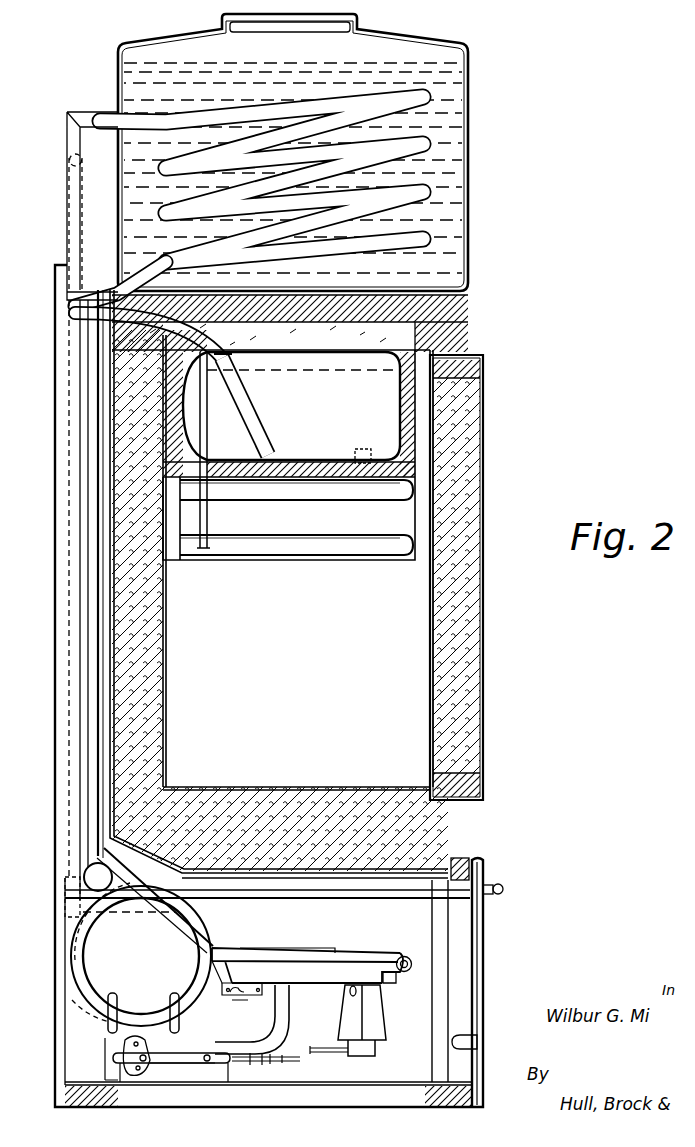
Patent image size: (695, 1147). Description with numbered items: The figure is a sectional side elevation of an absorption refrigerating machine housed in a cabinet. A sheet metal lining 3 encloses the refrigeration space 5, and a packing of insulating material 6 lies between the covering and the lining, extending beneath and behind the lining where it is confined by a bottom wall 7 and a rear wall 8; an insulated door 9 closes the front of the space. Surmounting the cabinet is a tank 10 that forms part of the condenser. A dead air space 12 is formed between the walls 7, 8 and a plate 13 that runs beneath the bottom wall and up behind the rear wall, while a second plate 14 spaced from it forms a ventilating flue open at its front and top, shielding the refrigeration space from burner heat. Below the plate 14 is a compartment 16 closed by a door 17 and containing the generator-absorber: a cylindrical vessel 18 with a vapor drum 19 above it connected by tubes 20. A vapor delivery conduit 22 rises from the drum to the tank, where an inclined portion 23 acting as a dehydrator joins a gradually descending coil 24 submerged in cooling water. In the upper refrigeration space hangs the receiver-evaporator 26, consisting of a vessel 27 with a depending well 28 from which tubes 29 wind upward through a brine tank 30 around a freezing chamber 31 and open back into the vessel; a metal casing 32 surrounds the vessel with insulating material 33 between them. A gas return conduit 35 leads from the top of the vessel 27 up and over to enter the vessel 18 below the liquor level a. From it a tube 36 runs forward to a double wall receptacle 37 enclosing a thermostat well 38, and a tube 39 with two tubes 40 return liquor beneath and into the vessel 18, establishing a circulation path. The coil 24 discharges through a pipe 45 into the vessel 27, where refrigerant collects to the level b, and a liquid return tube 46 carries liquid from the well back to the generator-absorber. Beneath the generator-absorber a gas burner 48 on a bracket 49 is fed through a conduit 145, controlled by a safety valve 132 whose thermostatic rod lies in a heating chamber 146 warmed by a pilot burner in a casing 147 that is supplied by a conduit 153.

The sheet metal lining 3 is at (166, 641).
The refrigeration space 5 is at (298, 561).
The insulating material 6 is at (273, 790).
The bottom wall 7 is at (273, 880).
The rear wall 8 is at (110, 660).
The insulated door 9 is at (466, 580).
The tank 10 is at (470, 112).
The dead air space 12 is at (113, 697).
The plate 13 is at (110, 618).
The plate 14 is at (322, 898).
The compartment 16 is at (405, 1010).
The door 17 is at (485, 968).
The cylindrical vessel 18 is at (141, 956).
The vapor drum 19 is at (88, 878).
The tubes 20 is at (112, 912).
The vapor delivery conduit 22 is at (80, 750).
The inclined portion of delivery conduit 23 is at (118, 114).
The coil 24 is at (467, 190).
The receiver-evaporator 26 is at (424, 472).
The vessel 27 is at (287, 356).
The well 28 is at (185, 555).
The tubes 29 is at (312, 495).
The brine tank 30 is at (380, 556).
The freezing chamber 31 is at (385, 512).
The metal casing 32 is at (416, 414).
The insulating material 33 is at (371, 455).
The gas return conduit 35 is at (68, 207).
The tube 36 is at (370, 950).
The double wall receptacle 37 is at (406, 957).
The thermostat well 38 is at (404, 975).
The tube 39 is at (289, 1016).
The tubes 40 is at (108, 1026).
The pipe 45 is at (116, 292).
The liquid return tube 46 is at (208, 447).
The gas burner 48 is at (122, 1054).
The bracket 49 is at (182, 1065).
The safety valve 132 is at (236, 995).
The conduit 145 is at (283, 1063).
The heating chamber 146 is at (317, 985).
The casing 147 is at (384, 1028).
The conduit 153 is at (324, 1049).
The liquor level a is at (150, 912).
The liquid level b is at (318, 370).